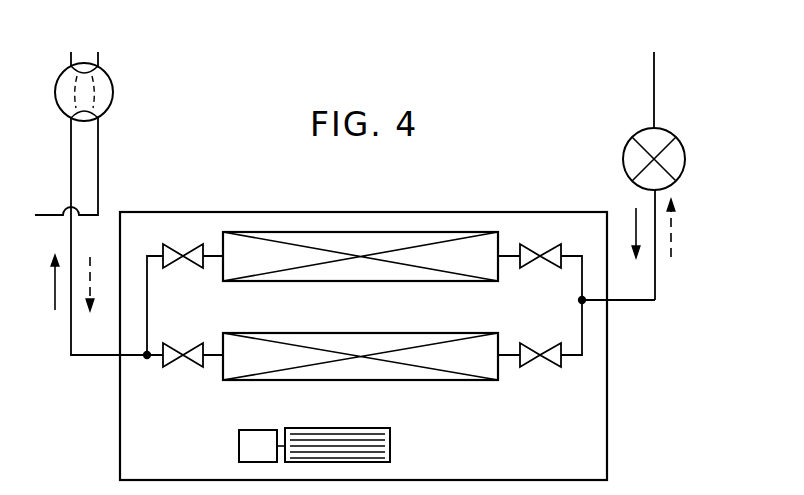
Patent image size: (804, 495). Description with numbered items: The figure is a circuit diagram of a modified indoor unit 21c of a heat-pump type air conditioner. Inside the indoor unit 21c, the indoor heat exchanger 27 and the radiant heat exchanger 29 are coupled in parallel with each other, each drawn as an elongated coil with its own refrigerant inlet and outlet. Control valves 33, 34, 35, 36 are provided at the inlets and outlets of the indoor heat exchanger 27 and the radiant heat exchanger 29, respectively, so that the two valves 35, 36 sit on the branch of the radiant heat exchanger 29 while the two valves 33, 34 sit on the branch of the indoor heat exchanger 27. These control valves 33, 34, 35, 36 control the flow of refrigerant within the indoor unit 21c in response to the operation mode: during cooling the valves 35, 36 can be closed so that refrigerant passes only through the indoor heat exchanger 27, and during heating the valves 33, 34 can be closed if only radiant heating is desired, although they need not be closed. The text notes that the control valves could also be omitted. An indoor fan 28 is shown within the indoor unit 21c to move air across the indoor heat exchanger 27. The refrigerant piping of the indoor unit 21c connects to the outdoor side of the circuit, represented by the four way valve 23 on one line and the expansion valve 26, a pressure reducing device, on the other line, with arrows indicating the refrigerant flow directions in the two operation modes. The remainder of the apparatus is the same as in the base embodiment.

The indoor unit 21c is at (125, 447).
The four way valve 23 is at (113, 92).
The expansion valve 26 is at (623, 158).
The indoor heat exchanger 27 is at (478, 381).
The indoor fan 28 is at (392, 444).
The radiant heat exchanger 29 is at (444, 236).
The control valve 33 is at (555, 359).
The control valve 34 is at (183, 367).
The control valve 35 is at (552, 255).
The control valve 36 is at (182, 268).